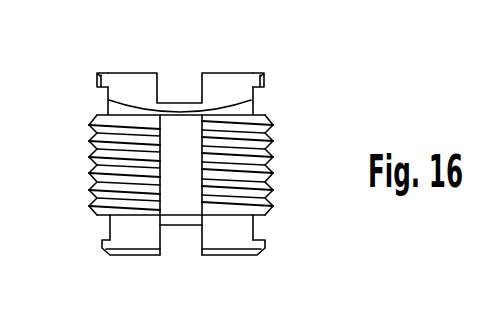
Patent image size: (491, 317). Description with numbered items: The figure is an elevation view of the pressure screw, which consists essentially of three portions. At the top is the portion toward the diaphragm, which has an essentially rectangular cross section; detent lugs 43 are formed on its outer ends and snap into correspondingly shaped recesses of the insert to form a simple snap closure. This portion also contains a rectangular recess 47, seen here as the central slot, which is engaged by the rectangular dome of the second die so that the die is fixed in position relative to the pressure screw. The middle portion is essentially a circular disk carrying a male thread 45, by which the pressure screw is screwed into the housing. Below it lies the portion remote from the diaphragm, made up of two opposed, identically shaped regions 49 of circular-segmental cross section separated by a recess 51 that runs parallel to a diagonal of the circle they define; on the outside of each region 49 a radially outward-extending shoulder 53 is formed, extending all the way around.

The detent lugs 43 is at (98, 75).
The male thread 45 is at (92, 175).
The recess 47 is at (180, 93).
The regions 49 is at (127, 228).
The recess 51 is at (180, 232).
The shoulder 53 is at (123, 248).